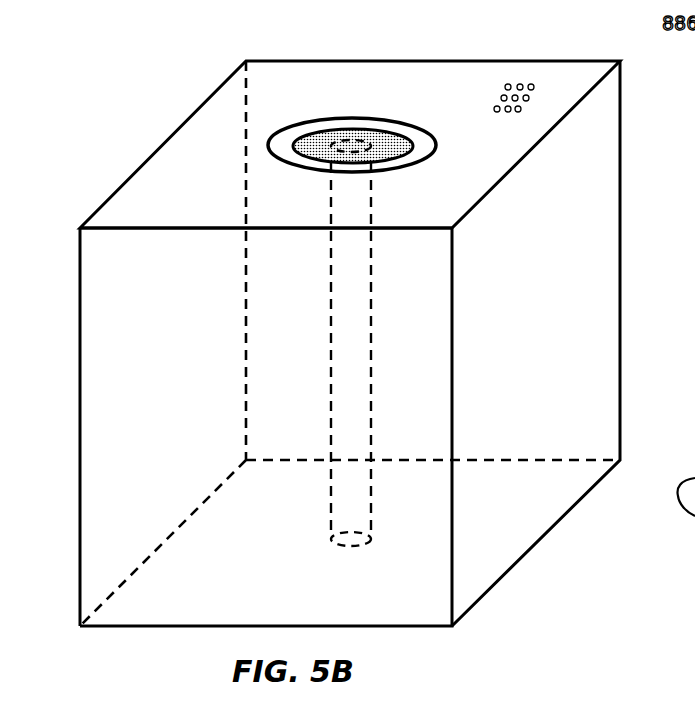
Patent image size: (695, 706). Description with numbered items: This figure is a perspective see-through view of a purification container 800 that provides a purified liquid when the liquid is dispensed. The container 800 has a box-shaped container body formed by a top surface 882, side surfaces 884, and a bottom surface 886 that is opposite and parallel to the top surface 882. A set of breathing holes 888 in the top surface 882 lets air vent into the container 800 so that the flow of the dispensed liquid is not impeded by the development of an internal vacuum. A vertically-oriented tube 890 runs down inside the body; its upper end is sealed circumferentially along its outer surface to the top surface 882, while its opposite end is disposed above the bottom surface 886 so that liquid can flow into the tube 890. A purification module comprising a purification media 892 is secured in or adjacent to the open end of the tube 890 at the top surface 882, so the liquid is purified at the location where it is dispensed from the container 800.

The purification container 800 is at (95, 69).
The top surface 882 is at (147, 200).
The side surfaces 884 is at (96, 384).
The bottom surface 886 is at (289, 581).
The breathing holes 888 is at (523, 87).
The tube 890 is at (372, 384).
The purification media 892 is at (320, 137).